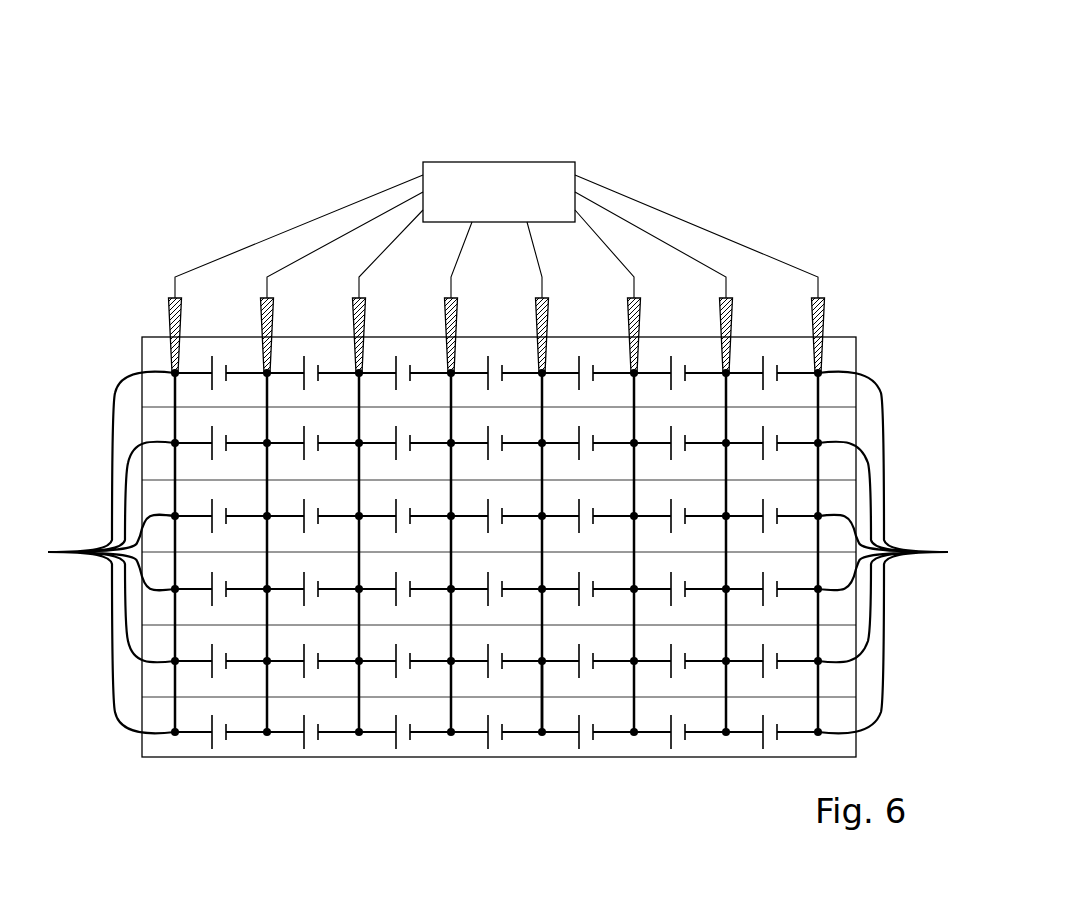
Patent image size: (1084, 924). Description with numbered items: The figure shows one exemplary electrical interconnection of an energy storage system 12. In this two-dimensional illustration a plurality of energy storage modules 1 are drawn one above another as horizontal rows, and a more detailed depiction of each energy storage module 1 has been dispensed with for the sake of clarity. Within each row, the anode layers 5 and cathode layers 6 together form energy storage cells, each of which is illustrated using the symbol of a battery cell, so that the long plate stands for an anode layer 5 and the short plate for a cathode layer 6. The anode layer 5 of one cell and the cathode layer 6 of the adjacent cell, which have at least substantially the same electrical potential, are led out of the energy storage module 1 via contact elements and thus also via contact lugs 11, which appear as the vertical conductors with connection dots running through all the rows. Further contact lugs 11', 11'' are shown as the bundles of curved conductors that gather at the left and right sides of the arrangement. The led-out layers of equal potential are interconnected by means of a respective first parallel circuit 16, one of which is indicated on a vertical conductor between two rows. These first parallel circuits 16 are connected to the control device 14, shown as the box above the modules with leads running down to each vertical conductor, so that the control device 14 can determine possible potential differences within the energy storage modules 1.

The energy storage module 1 is at (115, 336).
The anode layer 5 is at (210, 748).
The cathode layer 6 is at (230, 741).
The contact lug 11 is at (496, 599).
The contact lug 11' is at (109, 553).
The contact lug 11'' is at (890, 553).
The energy storage system 12 is at (646, 131).
The control device 14 is at (485, 205).
The first parallel circuit 16 is at (540, 676).